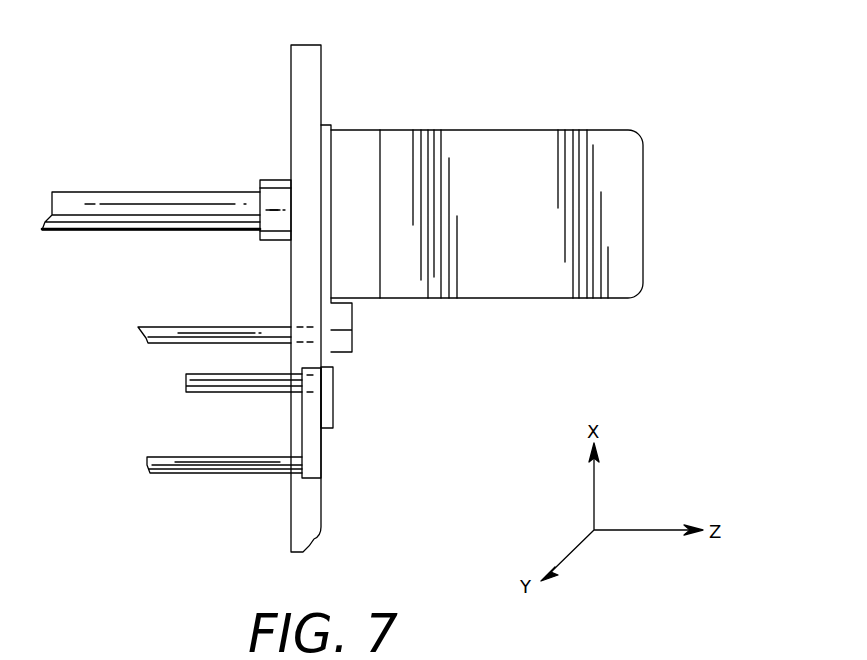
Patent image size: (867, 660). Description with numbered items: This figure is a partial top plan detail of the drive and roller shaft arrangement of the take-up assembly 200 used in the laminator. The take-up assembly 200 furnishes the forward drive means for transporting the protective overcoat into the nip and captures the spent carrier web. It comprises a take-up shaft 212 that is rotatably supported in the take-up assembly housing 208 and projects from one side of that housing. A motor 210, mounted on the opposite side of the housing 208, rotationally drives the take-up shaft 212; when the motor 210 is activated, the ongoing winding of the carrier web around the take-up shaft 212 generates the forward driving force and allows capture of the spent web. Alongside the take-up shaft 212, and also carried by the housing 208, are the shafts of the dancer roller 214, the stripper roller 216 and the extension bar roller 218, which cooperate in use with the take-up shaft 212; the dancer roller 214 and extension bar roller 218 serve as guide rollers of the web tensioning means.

The take-up assembly 200 is at (623, 71).
The take-up assembly housing 208 is at (325, 72).
The motor 210 is at (643, 248).
The take-up shaft 212 is at (117, 200).
The dancer roller 214 is at (170, 333).
The stripper roller 216 is at (212, 385).
The extension bar roller 218 is at (168, 462).